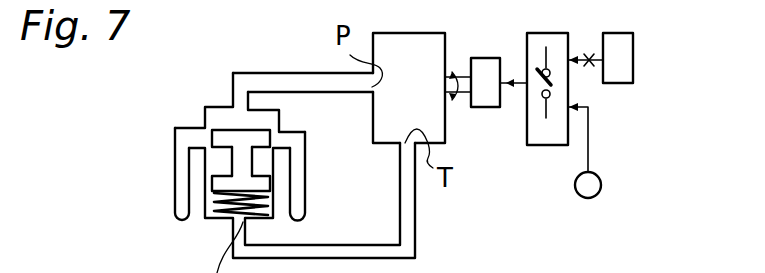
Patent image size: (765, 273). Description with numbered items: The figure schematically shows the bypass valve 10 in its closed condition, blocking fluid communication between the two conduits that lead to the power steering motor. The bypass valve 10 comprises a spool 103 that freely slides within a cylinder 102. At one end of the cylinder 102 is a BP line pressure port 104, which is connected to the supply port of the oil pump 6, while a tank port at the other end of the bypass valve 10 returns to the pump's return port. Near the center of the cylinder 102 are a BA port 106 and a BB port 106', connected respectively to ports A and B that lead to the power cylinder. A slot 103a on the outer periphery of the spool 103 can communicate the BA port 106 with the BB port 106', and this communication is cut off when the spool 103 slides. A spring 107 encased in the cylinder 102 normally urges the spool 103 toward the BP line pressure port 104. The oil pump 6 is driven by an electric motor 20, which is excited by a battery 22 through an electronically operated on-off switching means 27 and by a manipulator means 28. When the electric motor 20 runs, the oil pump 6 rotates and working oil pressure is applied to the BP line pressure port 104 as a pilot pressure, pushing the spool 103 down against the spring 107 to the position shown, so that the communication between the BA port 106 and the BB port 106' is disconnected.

The bypass valve 10 is at (246, 134).
The cylinder 102 is at (273, 162).
The spool 103 is at (259, 130).
The slot 103a is at (218, 160).
The BP line pressure port 104 is at (238, 102).
The BA port 106 is at (142, 174).
The BB port 106' is at (333, 176).
The spring 107 is at (222, 218).
The oil pump 6 is at (447, 41).
The electric motor 20 is at (486, 107).
The switching means 27 is at (540, 145).
The manipulator means 28 is at (622, 33).
The battery 22 is at (590, 198).